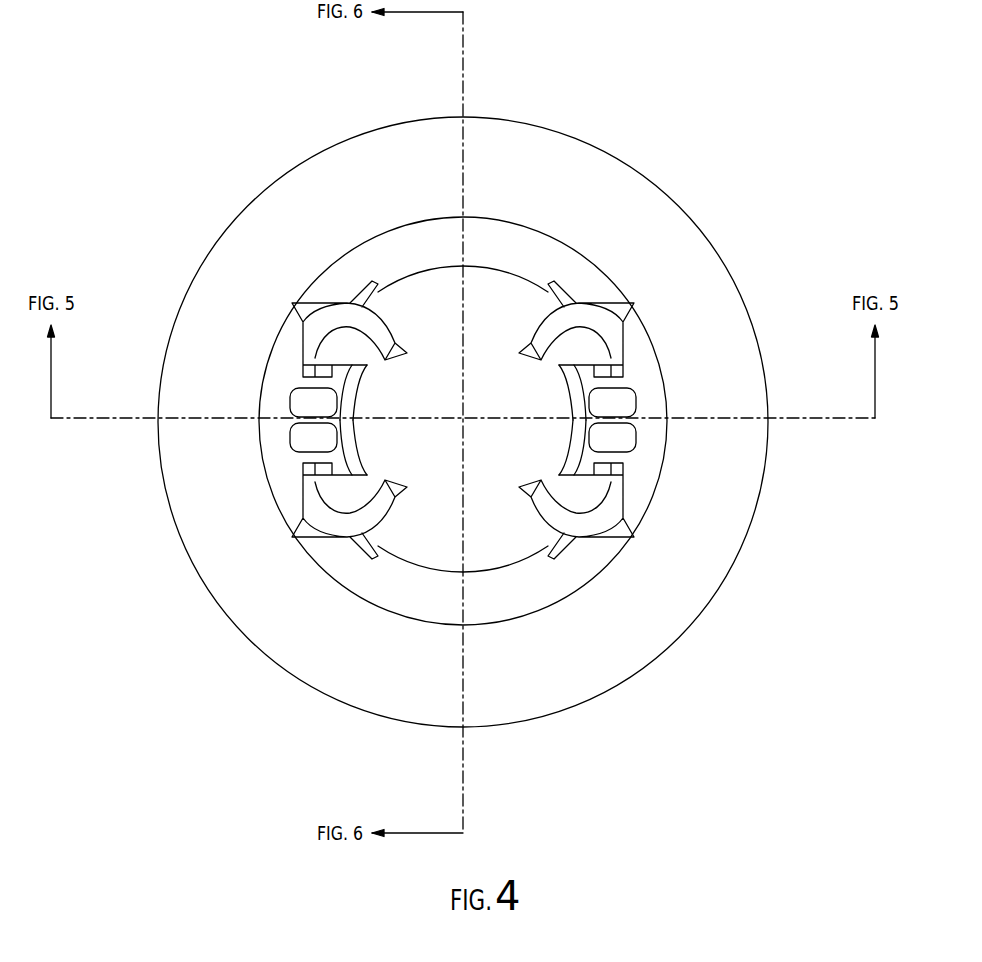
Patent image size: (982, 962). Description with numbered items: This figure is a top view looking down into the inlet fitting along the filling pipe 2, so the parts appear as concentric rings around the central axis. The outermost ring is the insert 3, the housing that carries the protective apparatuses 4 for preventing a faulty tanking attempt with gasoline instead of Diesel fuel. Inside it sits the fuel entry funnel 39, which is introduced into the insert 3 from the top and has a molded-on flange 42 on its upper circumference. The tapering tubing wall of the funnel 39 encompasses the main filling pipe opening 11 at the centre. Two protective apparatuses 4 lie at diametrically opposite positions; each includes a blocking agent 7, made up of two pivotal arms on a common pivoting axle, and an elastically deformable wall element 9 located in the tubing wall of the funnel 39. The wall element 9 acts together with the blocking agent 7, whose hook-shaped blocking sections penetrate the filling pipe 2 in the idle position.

The filling pipe 2 is at (510, 329).
The main filling pipe opening 11 is at (487, 337).
The insert 3 is at (377, 716).
The protective apparatus 4 is at (545, 409).
The blocking agent 7 is at (548, 505).
The wall element 9 is at (618, 400).
The fuel entry funnel 39 is at (410, 222).
The flange 42 is at (650, 218).